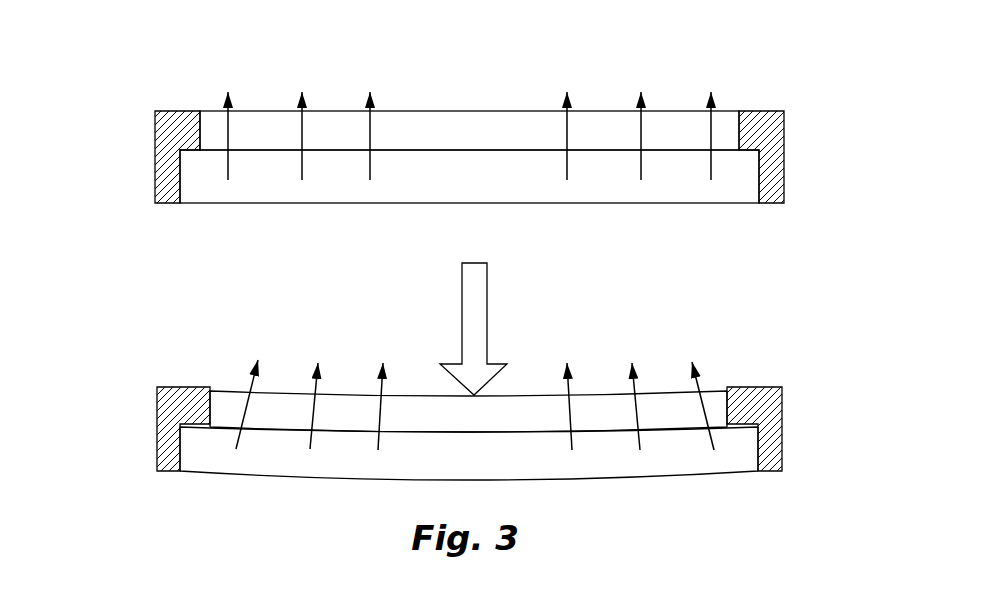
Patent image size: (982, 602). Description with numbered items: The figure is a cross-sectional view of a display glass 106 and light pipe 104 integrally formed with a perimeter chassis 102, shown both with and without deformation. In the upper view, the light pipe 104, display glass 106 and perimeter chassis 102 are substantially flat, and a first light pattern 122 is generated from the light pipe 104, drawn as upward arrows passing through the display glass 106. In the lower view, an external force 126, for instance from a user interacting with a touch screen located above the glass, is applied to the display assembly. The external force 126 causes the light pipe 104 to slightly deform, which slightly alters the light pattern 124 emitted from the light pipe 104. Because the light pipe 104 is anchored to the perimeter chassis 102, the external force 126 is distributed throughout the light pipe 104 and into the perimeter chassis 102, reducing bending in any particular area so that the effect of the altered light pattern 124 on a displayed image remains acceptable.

The perimeter chassis 102 is at (797, 478).
The light pipe 104 is at (469, 315).
The display glass 106 is at (469, 271).
The first light pattern 122 is at (638, 95).
The light pattern 124 is at (693, 365).
The external force 126 is at (470, 292).